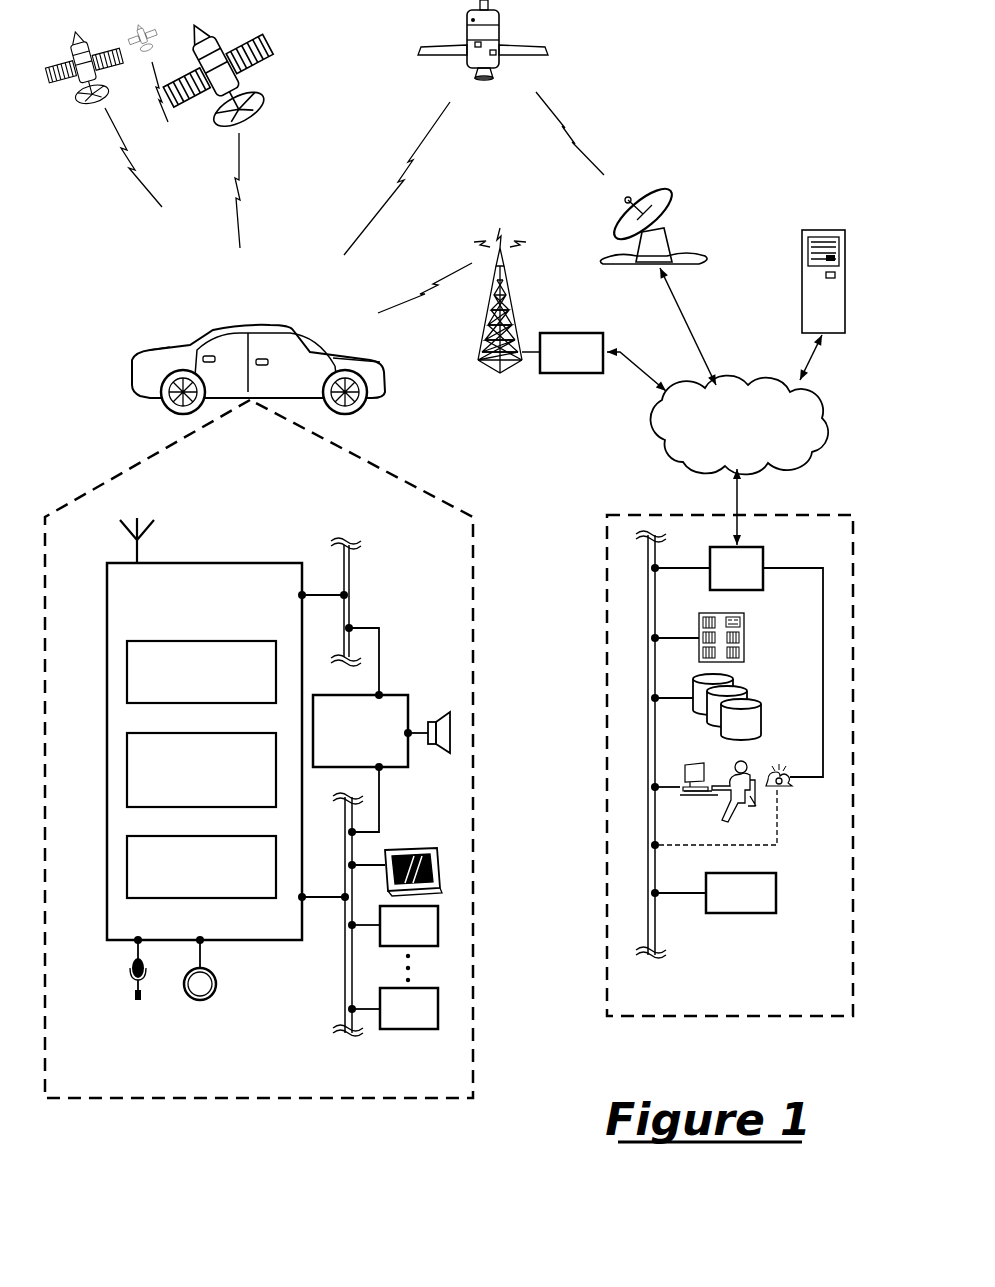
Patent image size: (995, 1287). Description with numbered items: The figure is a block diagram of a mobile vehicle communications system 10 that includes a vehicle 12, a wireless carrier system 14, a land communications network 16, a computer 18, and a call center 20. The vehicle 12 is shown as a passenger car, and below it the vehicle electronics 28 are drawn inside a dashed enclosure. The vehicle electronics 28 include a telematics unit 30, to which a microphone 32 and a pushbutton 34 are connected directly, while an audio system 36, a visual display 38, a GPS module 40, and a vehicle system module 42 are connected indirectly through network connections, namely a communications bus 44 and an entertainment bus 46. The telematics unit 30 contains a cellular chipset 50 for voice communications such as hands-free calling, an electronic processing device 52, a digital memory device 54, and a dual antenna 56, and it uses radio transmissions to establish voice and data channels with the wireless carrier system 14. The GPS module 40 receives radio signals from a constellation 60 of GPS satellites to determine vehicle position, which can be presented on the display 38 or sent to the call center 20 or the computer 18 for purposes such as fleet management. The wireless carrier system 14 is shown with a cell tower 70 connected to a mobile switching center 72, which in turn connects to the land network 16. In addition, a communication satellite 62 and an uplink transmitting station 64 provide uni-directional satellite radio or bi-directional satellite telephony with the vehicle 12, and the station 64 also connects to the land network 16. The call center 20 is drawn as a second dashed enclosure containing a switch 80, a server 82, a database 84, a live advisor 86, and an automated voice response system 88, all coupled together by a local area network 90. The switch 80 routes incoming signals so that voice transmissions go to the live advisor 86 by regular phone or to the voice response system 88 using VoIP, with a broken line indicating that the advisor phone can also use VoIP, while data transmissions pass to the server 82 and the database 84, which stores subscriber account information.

The mobile vehicle communications system 10 is at (758, 40).
The vehicle 12 is at (135, 376).
The wireless carrier system 14 is at (486, 394).
The land communications network 16 is at (828, 422).
The computer 18 is at (846, 295).
The call center 20 is at (720, 1018).
The vehicle electronics 28 is at (252, 1100).
The telematics unit 30 is at (256, 563).
The microphone 32 is at (128, 978).
The pushbutton 34 is at (217, 982).
The audio system 36 is at (395, 695).
The visual display 38 is at (400, 848).
The GPS module 40 is at (438, 930).
The vehicle system module 42 is at (395, 1029).
The communications bus 44 is at (343, 975).
The entertainment bus 46 is at (351, 569).
The cellular chipset 50 is at (201, 672).
The electronic processing device 52 is at (201, 770).
The digital memory device 54 is at (201, 867).
The dual antenna 56 is at (134, 549).
The constellation of GPS satellites 60 is at (302, 98).
The communication satellite 62 is at (498, 24).
The uplink transmitting station 64 is at (690, 247).
The cell tower 70 is at (510, 298).
The mobile switching center 72 is at (570, 333).
The switch 80 is at (737, 662).
The server 82 is at (745, 637).
The database 84 is at (762, 712).
The live advisor 86 is at (718, 807).
The automated voice response system 88 is at (776, 890).
The local area network 90 is at (658, 935).